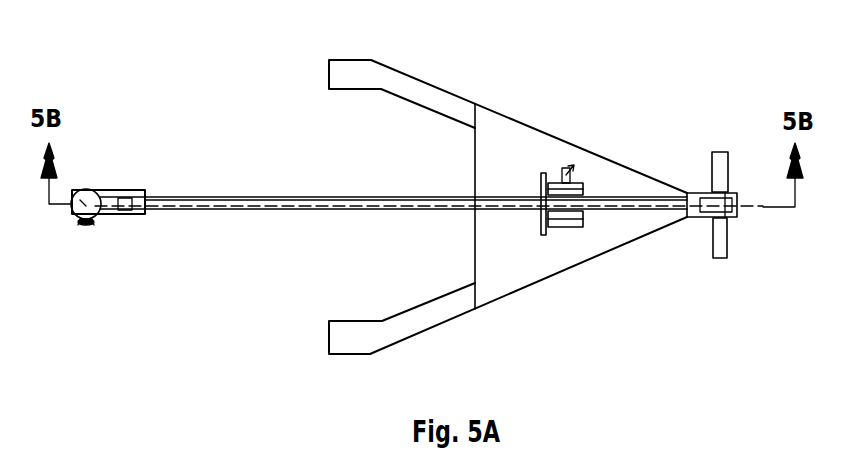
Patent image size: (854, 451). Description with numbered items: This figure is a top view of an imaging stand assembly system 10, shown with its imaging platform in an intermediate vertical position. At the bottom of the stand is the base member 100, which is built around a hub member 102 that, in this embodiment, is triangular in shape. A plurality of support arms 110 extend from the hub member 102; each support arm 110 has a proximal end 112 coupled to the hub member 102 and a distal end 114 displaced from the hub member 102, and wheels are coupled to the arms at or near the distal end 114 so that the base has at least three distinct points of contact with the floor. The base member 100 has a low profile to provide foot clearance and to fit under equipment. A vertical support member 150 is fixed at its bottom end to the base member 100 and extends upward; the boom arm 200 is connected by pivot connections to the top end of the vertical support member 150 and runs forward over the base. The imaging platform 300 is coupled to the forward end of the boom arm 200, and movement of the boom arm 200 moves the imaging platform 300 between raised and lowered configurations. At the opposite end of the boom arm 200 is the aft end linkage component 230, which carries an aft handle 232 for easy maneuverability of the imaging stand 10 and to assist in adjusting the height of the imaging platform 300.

The imaging stand assembly system 10 is at (620, 70).
The base member 100 is at (460, 78).
The hub member 102 is at (545, 157).
The support arms 110 is at (421, 106).
The proximal end 112 is at (478, 105).
The distal end 114 is at (352, 70).
The vertical support member 150 is at (568, 230).
The boom arm 200 is at (210, 195).
The aft end linkage component 230 is at (738, 215).
The aft handle 232 is at (727, 250).
The imaging platform 300 is at (87, 192).